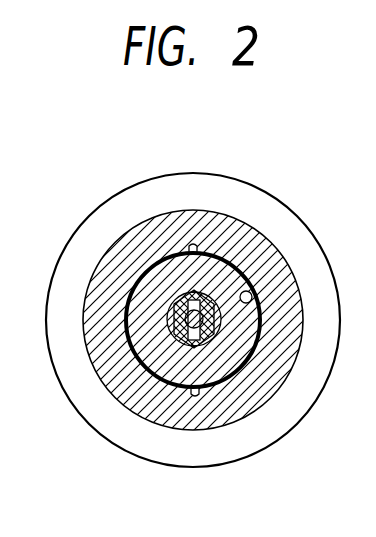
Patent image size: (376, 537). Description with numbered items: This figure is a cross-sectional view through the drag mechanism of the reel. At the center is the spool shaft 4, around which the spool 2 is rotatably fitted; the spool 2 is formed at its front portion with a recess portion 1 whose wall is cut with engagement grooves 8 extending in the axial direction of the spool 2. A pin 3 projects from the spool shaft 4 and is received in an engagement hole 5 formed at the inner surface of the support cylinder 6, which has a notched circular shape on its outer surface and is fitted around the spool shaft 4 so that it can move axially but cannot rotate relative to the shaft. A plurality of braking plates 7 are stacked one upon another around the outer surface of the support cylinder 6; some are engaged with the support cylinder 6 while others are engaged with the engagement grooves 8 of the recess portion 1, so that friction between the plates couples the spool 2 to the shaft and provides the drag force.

The recess portion 1 is at (263, 303).
The spool 2 is at (263, 205).
The pin 3 is at (123, 397).
The spool shaft 4 is at (187, 328).
The engagement hole 5 is at (205, 380).
The support cylinder 6 is at (157, 280).
The braking plates 7 is at (178, 301).
The engagement grooves 8 is at (198, 243).